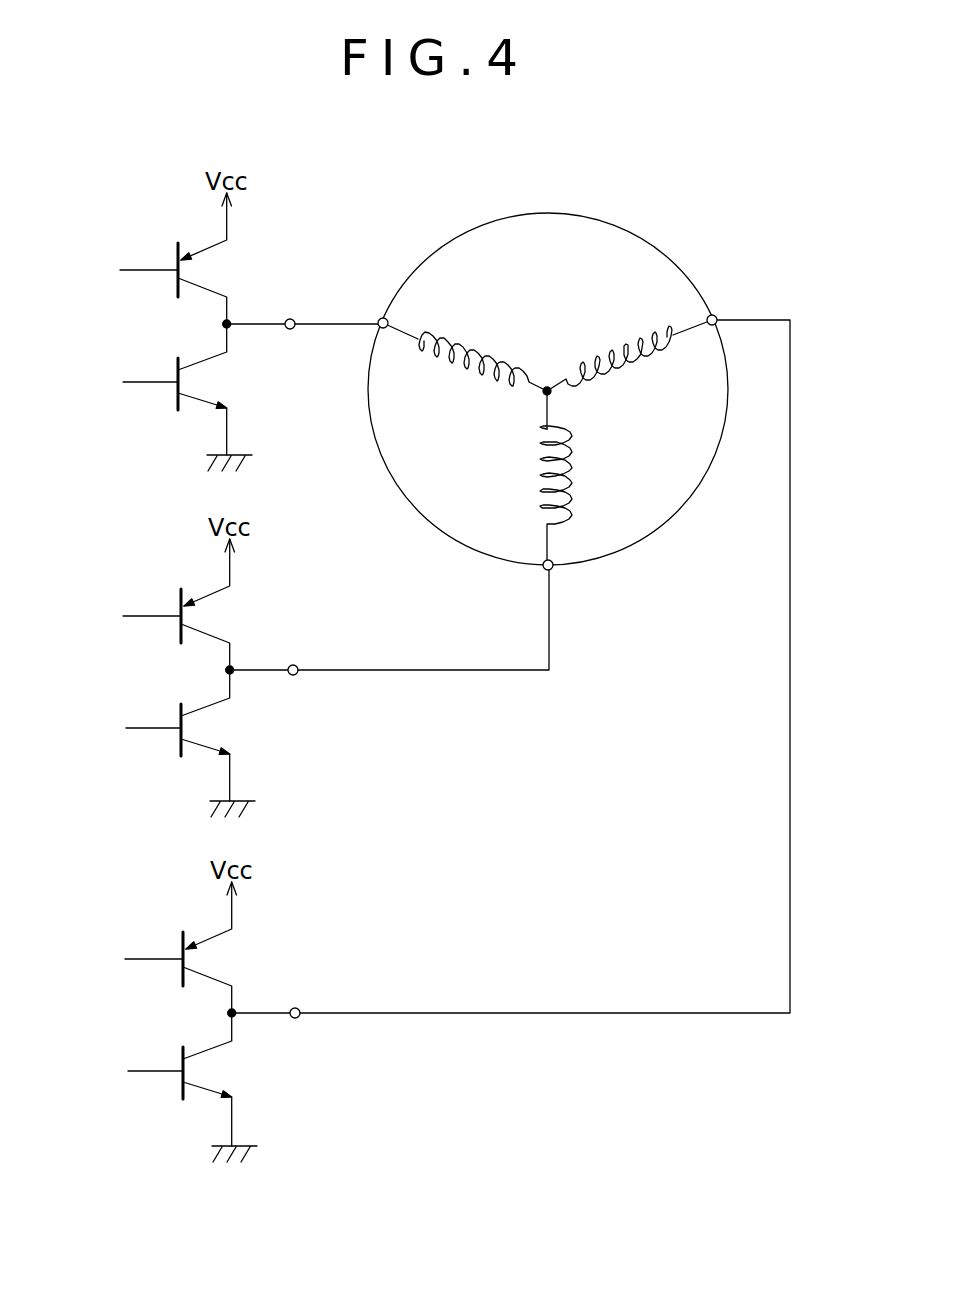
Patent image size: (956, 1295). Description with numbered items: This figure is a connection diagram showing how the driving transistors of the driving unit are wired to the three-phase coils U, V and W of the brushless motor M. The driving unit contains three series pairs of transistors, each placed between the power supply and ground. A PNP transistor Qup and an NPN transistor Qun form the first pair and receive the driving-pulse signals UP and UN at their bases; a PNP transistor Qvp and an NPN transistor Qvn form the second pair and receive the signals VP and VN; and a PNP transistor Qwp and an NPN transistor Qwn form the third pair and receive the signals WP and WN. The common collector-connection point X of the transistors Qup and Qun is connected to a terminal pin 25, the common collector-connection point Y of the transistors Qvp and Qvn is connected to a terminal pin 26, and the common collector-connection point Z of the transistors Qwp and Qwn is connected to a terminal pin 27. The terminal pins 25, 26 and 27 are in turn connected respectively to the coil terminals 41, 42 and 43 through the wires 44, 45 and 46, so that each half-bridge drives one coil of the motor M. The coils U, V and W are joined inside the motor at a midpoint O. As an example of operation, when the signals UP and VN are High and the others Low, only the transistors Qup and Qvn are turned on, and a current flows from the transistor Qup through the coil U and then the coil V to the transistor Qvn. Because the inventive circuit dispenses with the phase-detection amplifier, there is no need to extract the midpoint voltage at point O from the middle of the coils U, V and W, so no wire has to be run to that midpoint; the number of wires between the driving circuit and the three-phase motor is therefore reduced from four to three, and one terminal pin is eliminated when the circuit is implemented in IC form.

The terminal pin 25 is at (293, 329).
The terminal pin 26 is at (322, 697).
The terminal pin 27 is at (324, 1040).
The coil terminal 41 is at (385, 328).
The coil terminal 42 is at (551, 570).
The coil terminal 43 is at (716, 315).
The wire 44 is at (337, 320).
The wire 45 is at (413, 668).
The wire 46 is at (552, 1010).
The motor M is at (568, 381).
The PNP transistor Qup is at (205, 271).
The NPN transistor Qun is at (208, 384).
The PNP transistor Qvp is at (186, 629).
The NPN transistor Qvn is at (187, 745).
The PNP transistor Qwp is at (191, 972).
The NPN transistor Qwn is at (192, 1089).
The coil U is at (465, 349).
The coil V is at (570, 478).
The coil W is at (629, 348).
The midpoint O is at (550, 394).
The common collector-connection point X is at (222, 325).
The common collector-connection point Y is at (221, 678).
The common collector-connection point Z is at (224, 1021).